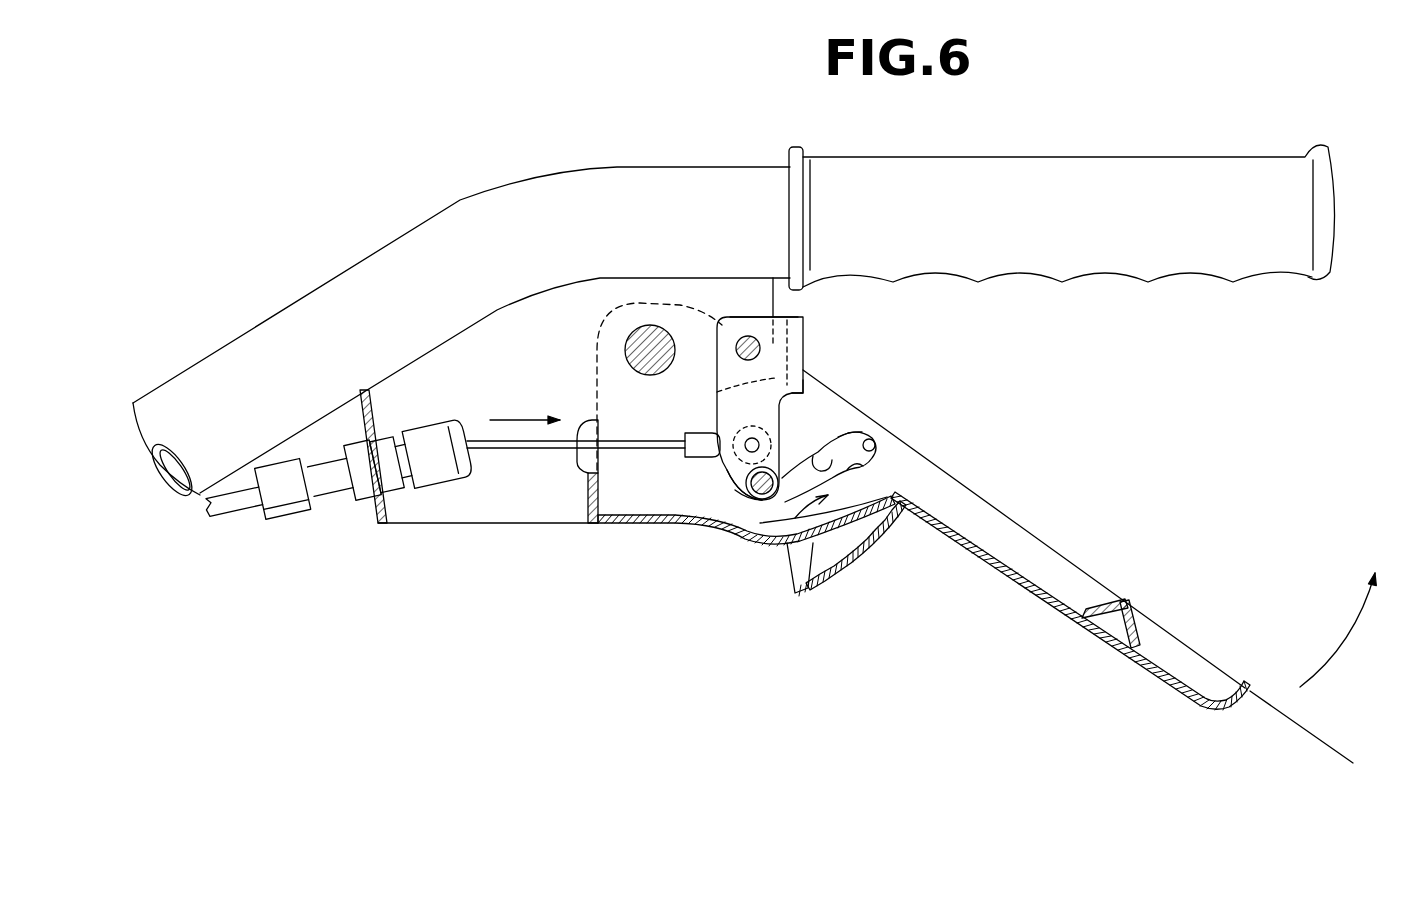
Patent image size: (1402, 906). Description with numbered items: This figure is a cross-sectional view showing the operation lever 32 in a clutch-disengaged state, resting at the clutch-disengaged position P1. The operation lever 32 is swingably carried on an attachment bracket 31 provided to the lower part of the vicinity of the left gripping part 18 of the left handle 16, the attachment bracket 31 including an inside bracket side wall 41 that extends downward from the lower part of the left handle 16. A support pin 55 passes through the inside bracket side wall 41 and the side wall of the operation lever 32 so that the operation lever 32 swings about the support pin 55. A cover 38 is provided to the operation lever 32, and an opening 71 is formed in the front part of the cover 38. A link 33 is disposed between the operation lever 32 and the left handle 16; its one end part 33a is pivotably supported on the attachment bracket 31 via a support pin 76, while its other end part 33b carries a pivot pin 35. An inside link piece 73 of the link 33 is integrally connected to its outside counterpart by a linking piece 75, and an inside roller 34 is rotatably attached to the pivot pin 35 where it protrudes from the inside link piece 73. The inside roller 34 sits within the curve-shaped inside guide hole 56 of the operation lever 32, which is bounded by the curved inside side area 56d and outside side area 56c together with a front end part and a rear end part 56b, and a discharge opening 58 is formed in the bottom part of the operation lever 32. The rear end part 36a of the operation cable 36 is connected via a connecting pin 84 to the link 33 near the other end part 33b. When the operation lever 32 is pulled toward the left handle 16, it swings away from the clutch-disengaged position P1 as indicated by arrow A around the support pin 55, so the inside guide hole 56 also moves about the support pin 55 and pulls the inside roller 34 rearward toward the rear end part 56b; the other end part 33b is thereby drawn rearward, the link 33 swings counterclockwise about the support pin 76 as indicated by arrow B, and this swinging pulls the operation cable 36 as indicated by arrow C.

The left handle 16 is at (617, 183).
The left gripping part 18 is at (1128, 170).
The inside bracket side wall 41 is at (483, 353).
The support pin 55 is at (640, 337).
The support pin 76 is at (747, 337).
The one end part 33a is at (752, 322).
The linking piece 75 is at (795, 331).
The link 33 is at (812, 352).
The connecting pin 84 is at (767, 440).
The inside side area 56d is at (838, 445).
The rear end part 56b is at (874, 448).
The outside side area 56c is at (864, 468).
The operation lever 32 is at (1080, 553).
The arrow C is at (510, 417).
The inside link piece 73 is at (733, 413).
The operation cable 36 is at (523, 447).
The rear end part 36a is at (700, 457).
The other end part 33b is at (722, 492).
The inside roller 34 is at (745, 505).
The discharge opening 58 is at (752, 500).
The pivot pin 35 is at (767, 500).
The opening 71 is at (797, 570).
The arrow B is at (822, 579).
The inside guide hole 56 is at (845, 487).
The cover 38 is at (897, 527).
The attachment bracket 31 is at (445, 530).
The arrow A is at (1347, 633).
The clutch-disengaged position P1 is at (1321, 743).